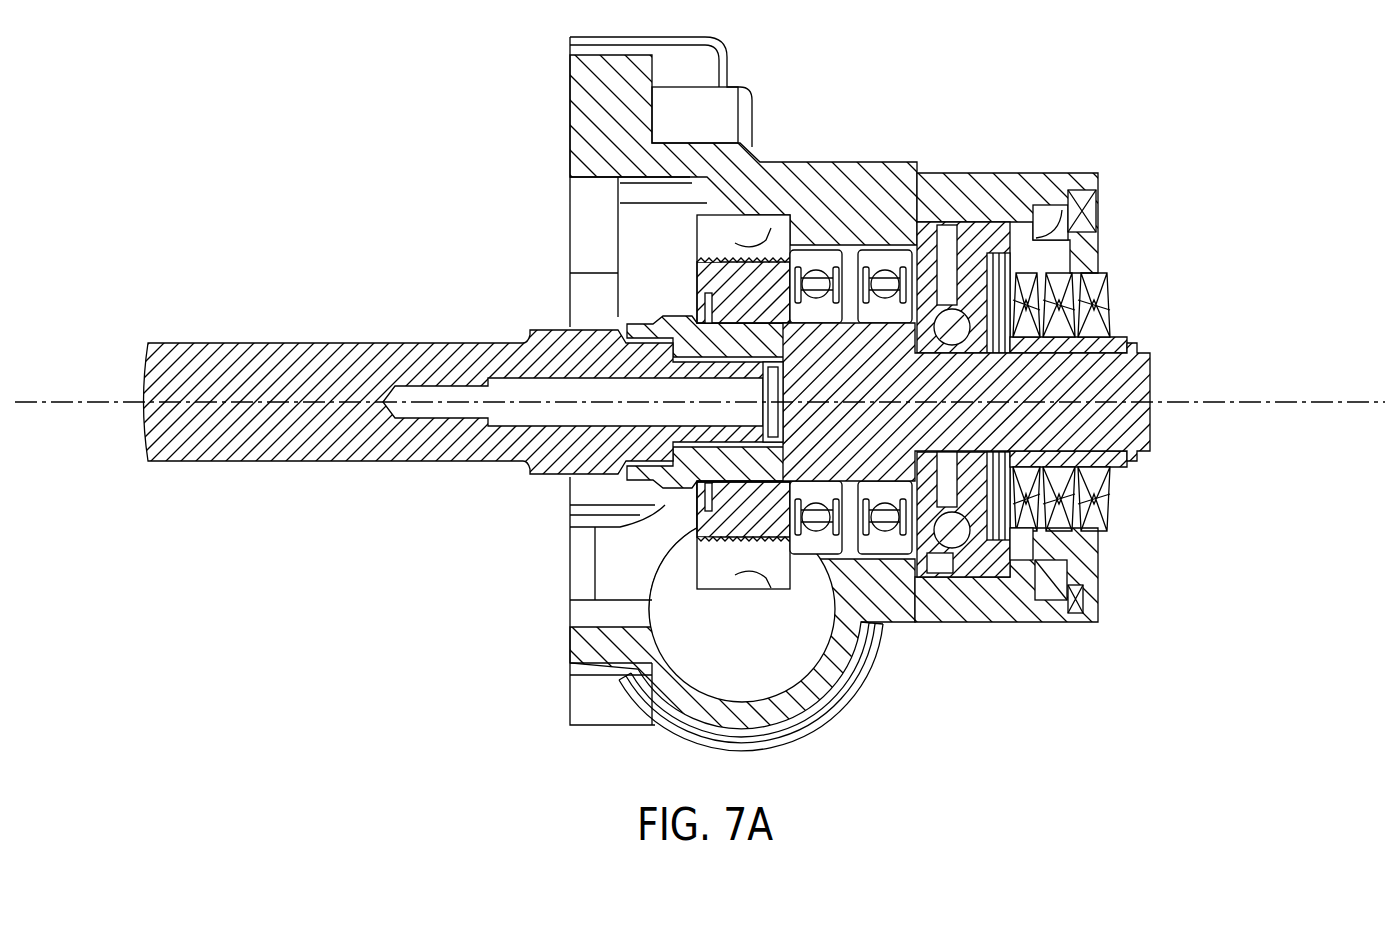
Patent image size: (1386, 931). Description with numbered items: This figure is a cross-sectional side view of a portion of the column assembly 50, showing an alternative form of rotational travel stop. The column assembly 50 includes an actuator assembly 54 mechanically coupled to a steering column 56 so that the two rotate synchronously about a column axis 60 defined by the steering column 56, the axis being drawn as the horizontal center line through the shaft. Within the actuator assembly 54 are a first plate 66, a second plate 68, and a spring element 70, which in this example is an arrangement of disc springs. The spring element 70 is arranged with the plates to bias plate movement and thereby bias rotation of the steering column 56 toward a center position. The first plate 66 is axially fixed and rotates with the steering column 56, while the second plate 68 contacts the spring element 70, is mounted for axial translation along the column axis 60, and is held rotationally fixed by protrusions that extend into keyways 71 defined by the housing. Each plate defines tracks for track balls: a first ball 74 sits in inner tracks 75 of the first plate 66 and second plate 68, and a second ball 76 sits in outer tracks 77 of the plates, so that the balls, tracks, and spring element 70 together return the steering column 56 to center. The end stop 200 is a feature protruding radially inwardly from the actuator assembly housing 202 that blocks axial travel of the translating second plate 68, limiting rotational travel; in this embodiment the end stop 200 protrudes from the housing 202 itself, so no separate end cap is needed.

The column assembly 50 is at (693, 395).
The actuator assembly 54 is at (1008, 192).
The steering column 56 is at (1150, 368).
The column axis 60 is at (63, 400).
The first plate 66 is at (926, 576).
The second plate 68 is at (995, 578).
The spring element 70 is at (1088, 265).
The keyways 71 is at (1040, 222).
The first ball 74 is at (985, 537).
The inner tracks 75 is at (963, 292).
The second ball 76 is at (975, 305).
The outer tracks 77 is at (940, 562).
The end stop 200 is at (880, 172).
The actuator assembly housing 202 is at (1062, 250).